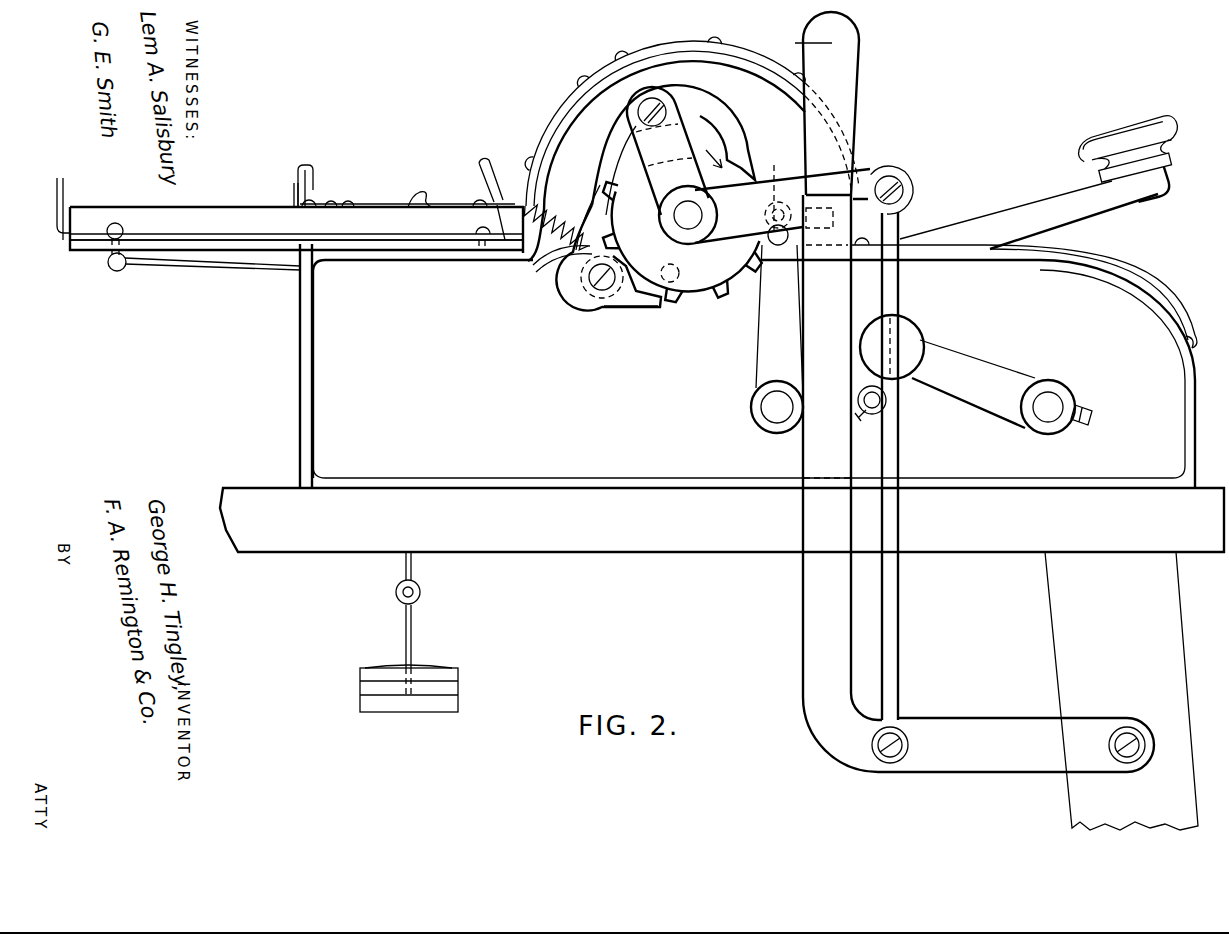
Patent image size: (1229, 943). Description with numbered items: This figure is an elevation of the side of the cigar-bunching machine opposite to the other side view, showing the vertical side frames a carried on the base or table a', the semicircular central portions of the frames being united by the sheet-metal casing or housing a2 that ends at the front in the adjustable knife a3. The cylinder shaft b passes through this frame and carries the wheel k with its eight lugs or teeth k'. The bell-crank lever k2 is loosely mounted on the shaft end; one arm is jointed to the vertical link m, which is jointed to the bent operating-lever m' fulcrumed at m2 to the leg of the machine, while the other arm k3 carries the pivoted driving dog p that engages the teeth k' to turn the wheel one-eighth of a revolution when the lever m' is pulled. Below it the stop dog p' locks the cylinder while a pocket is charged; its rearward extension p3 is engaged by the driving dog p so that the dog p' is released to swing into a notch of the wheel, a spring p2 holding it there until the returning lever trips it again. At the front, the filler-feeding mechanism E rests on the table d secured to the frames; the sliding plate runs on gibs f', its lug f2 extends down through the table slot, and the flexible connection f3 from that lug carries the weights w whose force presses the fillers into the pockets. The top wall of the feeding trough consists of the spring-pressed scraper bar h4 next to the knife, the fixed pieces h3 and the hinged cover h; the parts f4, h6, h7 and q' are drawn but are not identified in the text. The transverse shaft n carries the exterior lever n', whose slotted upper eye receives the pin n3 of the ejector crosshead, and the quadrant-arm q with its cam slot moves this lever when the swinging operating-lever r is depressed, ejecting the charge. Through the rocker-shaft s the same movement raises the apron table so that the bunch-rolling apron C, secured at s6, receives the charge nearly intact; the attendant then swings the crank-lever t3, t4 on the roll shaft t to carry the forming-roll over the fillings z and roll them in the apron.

The side frames a is at (747, 300).
The base or table a' is at (647, 364).
The casing or housing a2 is at (648, 53).
The cutter or knife a3 is at (522, 163).
The shaft b is at (686, 214).
The bunch-rolling apron C is at (1118, 258).
The table d is at (387, 245).
The filler-feeding mechanism E is at (407, 178).
The gibs f' is at (56, 252).
The lug f2 is at (117, 262).
The flexible connection f3 is at (200, 262).
The hook f4 is at (66, 198).
The cover h is at (376, 205).
The fixed pieces h3 is at (468, 205).
The spring-pressed bar h4 is at (499, 200).
The spring clip h6 is at (417, 192).
The spring h7 is at (552, 200).
The wheel k is at (682, 242).
The lugs or teeth k' is at (724, 298).
The bell-crank lever k2 is at (782, 206).
The arm of bell-crank lever k3 is at (668, 151).
The link m is at (908, 443).
The operating-lever m' is at (978, 392).
The fulcrum m2 is at (1128, 730).
The shaft n is at (762, 407).
The exterior lever n' is at (762, 320).
The pin n3 is at (798, 197).
The dog p is at (655, 197).
The dog p' is at (630, 318).
The spring p2 is at (540, 256).
The rearward extension p3 is at (600, 196).
The quadrant-arm q is at (287, 188).
The guide hook q' is at (297, 172).
The operating-lever r is at (1035, 207).
The rocker-shaft s is at (885, 410).
The apron attachment point s6 is at (1185, 340).
The shaft t is at (1047, 395).
The crank-handle t3 is at (960, 360).
The crank-lever t4 is at (912, 337).
The weights w is at (445, 670).
The fillings z is at (804, 48).